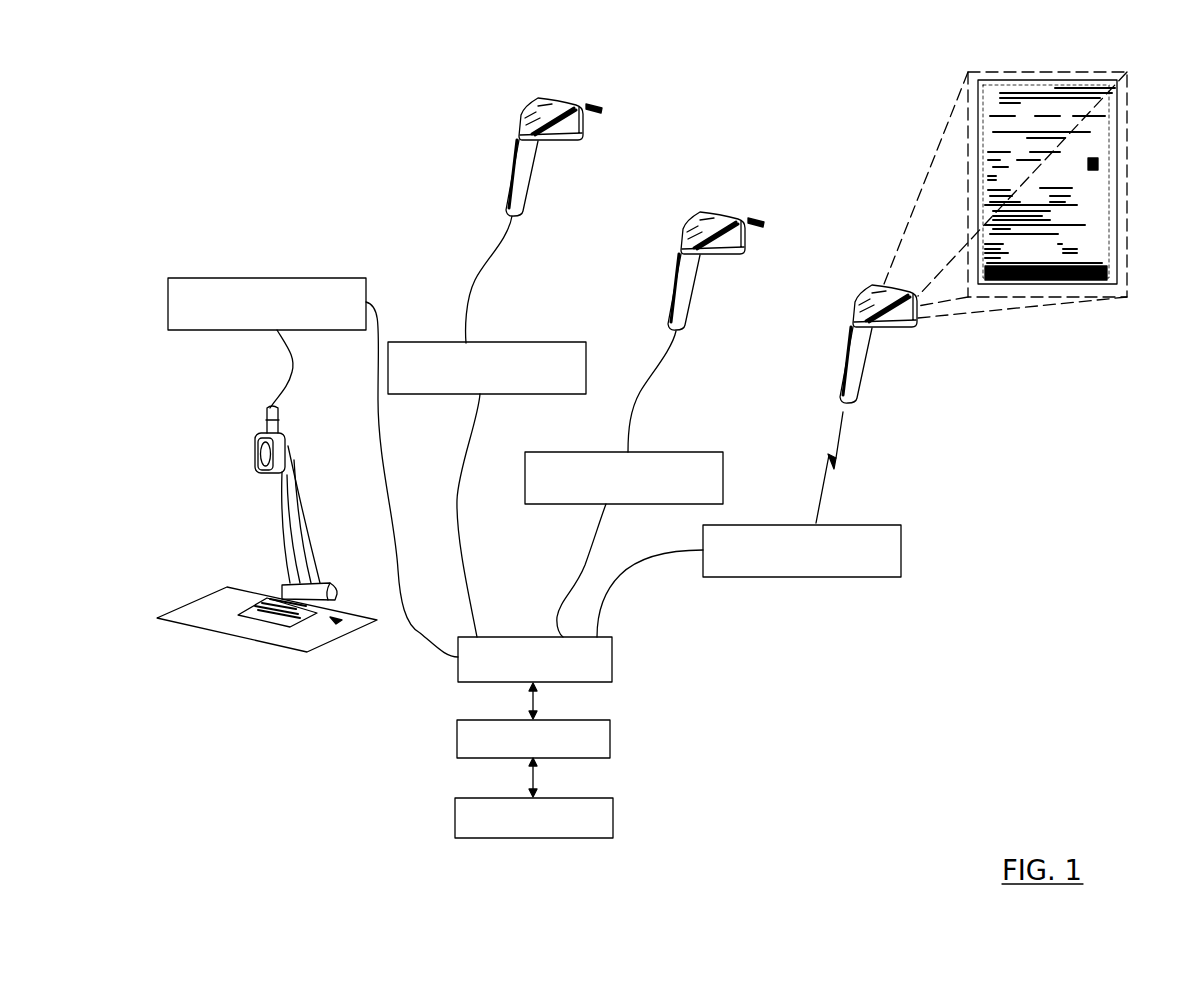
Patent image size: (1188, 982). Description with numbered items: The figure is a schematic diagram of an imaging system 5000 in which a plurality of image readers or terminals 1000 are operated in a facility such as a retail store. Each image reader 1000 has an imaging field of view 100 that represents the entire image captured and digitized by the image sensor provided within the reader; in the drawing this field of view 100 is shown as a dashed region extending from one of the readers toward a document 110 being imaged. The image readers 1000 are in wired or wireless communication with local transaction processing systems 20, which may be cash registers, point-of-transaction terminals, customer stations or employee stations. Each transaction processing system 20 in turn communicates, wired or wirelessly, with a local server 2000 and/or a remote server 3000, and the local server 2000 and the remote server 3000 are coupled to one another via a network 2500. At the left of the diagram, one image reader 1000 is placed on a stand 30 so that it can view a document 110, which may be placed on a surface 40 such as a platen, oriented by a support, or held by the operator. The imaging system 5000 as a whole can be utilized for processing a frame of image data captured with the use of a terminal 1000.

The transaction processing system 20 is at (347, 278).
The stand 30 is at (320, 560).
The surface 40 is at (270, 638).
The imaging field of view 100 is at (970, 72).
The document 110 is at (305, 619).
The image reader 1000 is at (257, 443).
The local server 2000 is at (612, 667).
The network 2500 is at (610, 740).
The remote server 3000 is at (613, 817).
The imaging system 5000 is at (837, 696).